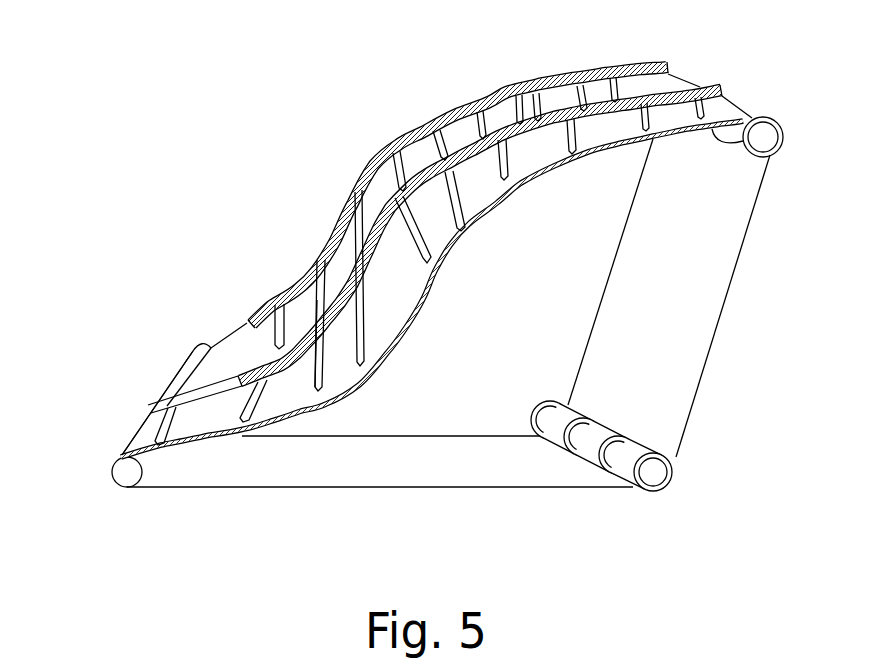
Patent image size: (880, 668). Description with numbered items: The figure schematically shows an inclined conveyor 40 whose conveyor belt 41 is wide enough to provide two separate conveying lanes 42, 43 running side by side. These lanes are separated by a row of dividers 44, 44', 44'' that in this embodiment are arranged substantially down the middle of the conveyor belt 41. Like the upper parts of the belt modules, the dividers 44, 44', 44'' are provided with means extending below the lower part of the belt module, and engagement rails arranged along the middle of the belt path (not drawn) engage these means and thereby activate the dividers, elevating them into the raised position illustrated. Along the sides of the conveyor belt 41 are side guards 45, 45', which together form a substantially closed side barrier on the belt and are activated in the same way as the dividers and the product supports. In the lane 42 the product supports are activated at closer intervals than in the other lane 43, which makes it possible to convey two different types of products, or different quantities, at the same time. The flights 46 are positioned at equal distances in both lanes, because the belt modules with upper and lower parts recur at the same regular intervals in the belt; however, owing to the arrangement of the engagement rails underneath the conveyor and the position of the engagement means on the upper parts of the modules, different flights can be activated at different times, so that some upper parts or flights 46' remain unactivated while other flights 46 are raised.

The inclined conveyor 40 is at (394, 250).
The conveyor belt 41 is at (112, 398).
The conveying lane 42 is at (255, 396).
The conveying lane 43 is at (227, 352).
The divider 44 is at (435, 249).
The divider 44' is at (265, 279).
The divider 44'' is at (300, 277).
The side guard 45 is at (458, 182).
The side guard 45' is at (600, 63).
The flight 46 is at (463, 246).
The flight 46' is at (269, 377).